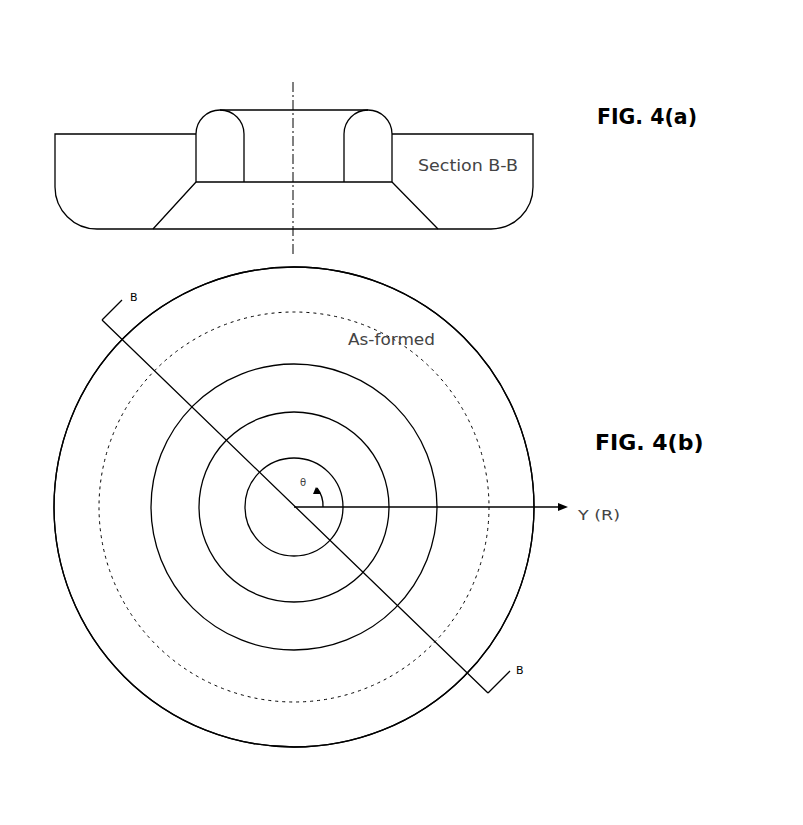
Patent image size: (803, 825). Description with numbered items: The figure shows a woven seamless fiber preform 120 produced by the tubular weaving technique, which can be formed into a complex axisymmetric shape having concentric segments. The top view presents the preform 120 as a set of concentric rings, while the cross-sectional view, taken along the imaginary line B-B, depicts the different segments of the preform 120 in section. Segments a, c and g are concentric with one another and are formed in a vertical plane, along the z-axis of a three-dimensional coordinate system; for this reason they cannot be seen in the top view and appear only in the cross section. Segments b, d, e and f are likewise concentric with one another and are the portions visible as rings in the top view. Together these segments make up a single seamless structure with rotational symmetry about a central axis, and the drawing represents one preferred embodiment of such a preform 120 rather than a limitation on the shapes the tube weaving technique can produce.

In FIG. 4A, the seamless fiber preform 120 is at (346, 82).
In FIG. 4B, the seamless fiber preform 120 is at (511, 360).
In FIG. 4A, the segment a is at (294, 146).
In FIG. 4A, the segment b is at (294, 130).
In FIG. 4B, the segment b is at (294, 507).
In FIG. 4A, the segment c is at (283, 158).
In FIG. 4A, the segment d is at (293, 201).
In FIG. 4B, the segment d is at (294, 507).
In FIG. 4A, the segment e is at (294, 211).
In FIG. 4B, the segment e is at (294, 507).
In FIG. 4A, the segment f is at (294, 206).
In FIG. 4B, the segment f is at (294, 507).
In FIG. 4A, the segment g is at (281, 160).